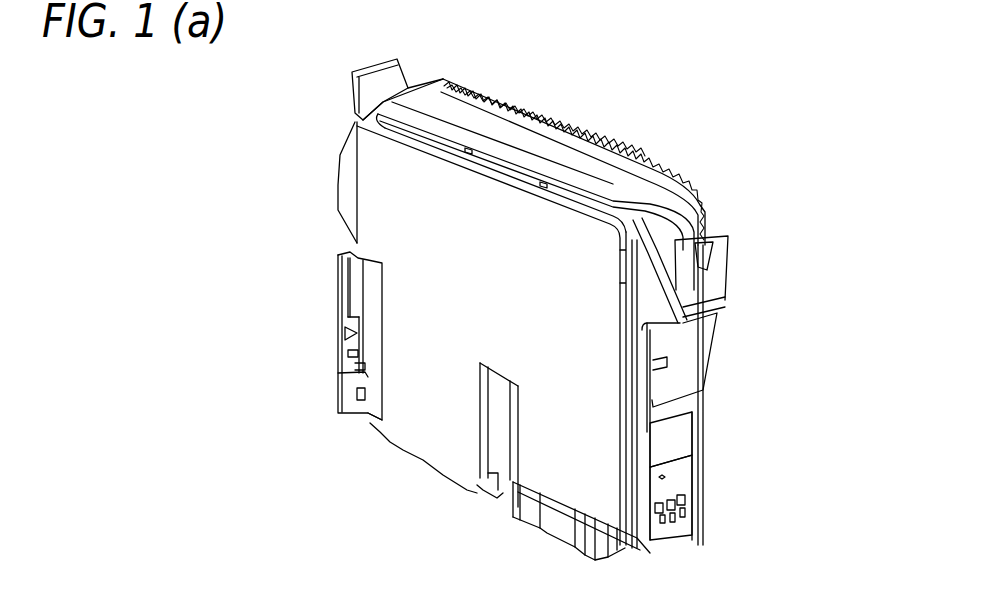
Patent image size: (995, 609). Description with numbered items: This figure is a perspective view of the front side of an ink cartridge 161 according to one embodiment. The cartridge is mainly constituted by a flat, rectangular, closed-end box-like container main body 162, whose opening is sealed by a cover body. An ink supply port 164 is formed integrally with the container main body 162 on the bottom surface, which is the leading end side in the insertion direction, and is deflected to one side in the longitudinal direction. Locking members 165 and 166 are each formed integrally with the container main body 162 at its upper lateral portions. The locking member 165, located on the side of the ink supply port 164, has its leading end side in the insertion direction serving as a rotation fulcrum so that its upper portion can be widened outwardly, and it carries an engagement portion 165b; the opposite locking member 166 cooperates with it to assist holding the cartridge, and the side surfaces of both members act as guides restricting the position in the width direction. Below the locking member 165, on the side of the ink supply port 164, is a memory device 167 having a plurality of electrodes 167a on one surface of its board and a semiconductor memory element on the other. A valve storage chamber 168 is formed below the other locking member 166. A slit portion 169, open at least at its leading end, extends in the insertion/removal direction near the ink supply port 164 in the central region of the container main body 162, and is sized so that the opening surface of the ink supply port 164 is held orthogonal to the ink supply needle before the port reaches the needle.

The ink cartridge 161 is at (672, 130).
The container main body 162 is at (567, 128).
The ink supply port 164 is at (523, 530).
The locking member 165 is at (724, 236).
The engagement portion of lever 165b is at (727, 305).
The locking member 166 is at (375, 65).
The memory device 167 is at (680, 475).
The electrodes 167a is at (683, 518).
The valve storage chamber 168 is at (338, 383).
The slit portion 169 is at (503, 418).